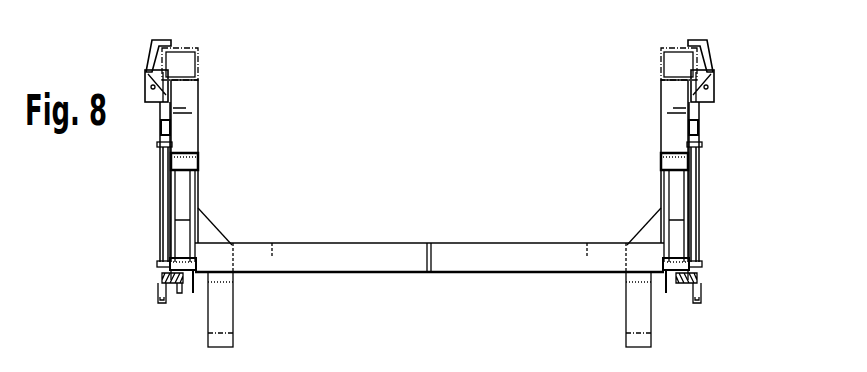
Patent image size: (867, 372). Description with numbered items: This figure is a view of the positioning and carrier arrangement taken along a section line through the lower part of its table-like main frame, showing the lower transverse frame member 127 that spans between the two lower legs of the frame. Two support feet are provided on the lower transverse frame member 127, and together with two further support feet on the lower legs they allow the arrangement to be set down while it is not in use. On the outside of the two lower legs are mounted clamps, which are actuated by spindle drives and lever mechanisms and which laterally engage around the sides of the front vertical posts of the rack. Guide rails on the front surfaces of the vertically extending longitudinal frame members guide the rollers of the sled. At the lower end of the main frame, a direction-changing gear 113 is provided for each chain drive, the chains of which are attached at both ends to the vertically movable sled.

The direction-changing gear 113 is at (180, 293).
The lower transverse frame member 127 is at (449, 262).